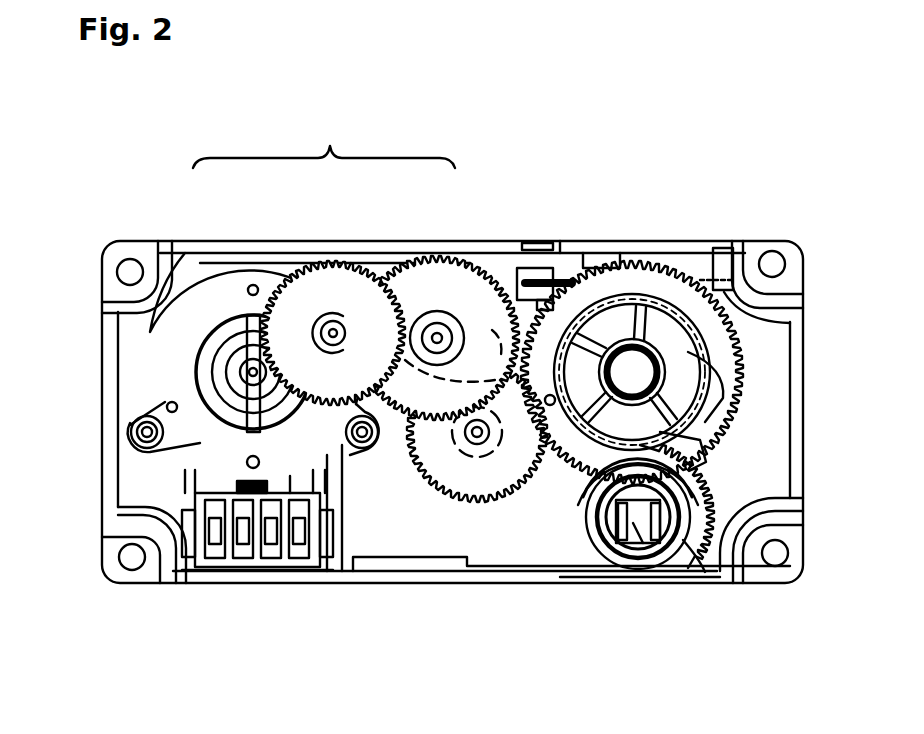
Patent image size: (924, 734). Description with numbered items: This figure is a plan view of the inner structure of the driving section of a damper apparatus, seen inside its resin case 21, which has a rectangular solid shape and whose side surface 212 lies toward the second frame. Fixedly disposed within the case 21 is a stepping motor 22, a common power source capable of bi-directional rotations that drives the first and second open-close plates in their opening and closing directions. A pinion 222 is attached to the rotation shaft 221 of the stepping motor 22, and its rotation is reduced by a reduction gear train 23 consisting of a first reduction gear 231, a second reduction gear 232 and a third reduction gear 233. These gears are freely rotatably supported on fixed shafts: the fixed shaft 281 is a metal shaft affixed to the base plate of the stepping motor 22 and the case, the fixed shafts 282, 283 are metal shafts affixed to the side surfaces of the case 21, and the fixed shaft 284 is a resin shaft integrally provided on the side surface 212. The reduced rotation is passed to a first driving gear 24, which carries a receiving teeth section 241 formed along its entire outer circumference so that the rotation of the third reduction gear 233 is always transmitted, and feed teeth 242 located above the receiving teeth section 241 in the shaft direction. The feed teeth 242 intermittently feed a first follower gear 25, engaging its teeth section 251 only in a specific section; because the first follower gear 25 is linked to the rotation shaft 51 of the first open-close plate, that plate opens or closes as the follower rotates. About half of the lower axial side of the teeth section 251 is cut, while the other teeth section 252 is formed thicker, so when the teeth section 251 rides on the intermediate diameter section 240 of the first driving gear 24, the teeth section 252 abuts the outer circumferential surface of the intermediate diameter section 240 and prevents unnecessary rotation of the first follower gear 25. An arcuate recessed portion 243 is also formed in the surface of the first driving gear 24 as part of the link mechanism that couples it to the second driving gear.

The case 21 is at (806, 513).
The side surface 212 is at (510, 545).
The stepping motor 22 is at (203, 310).
The rotation shaft 221 is at (245, 366).
The pinion 222 is at (243, 387).
The reduction gear train 23 is at (324, 142).
The first reduction gear 231 is at (295, 305).
The second reduction gear 232 is at (428, 322).
The third reduction gear 233 is at (497, 330).
The first driving gear 24 is at (765, 328).
The intermediate diameter section 240 is at (705, 248).
The receiving teeth section 241 is at (557, 268).
The feed teeth 242 is at (690, 410).
The arcuate recessed portion 243 is at (645, 300).
The first follower gear 25 is at (712, 505).
The teeth section 251 is at (707, 545).
The teeth section 252 is at (705, 462).
The fixed shaft 281 is at (348, 345).
The fixed shaft 282 is at (398, 345).
The fixed shaft 283 is at (476, 442).
The fixed shaft 284 is at (550, 400).
The rotation shaft 51 is at (640, 545).